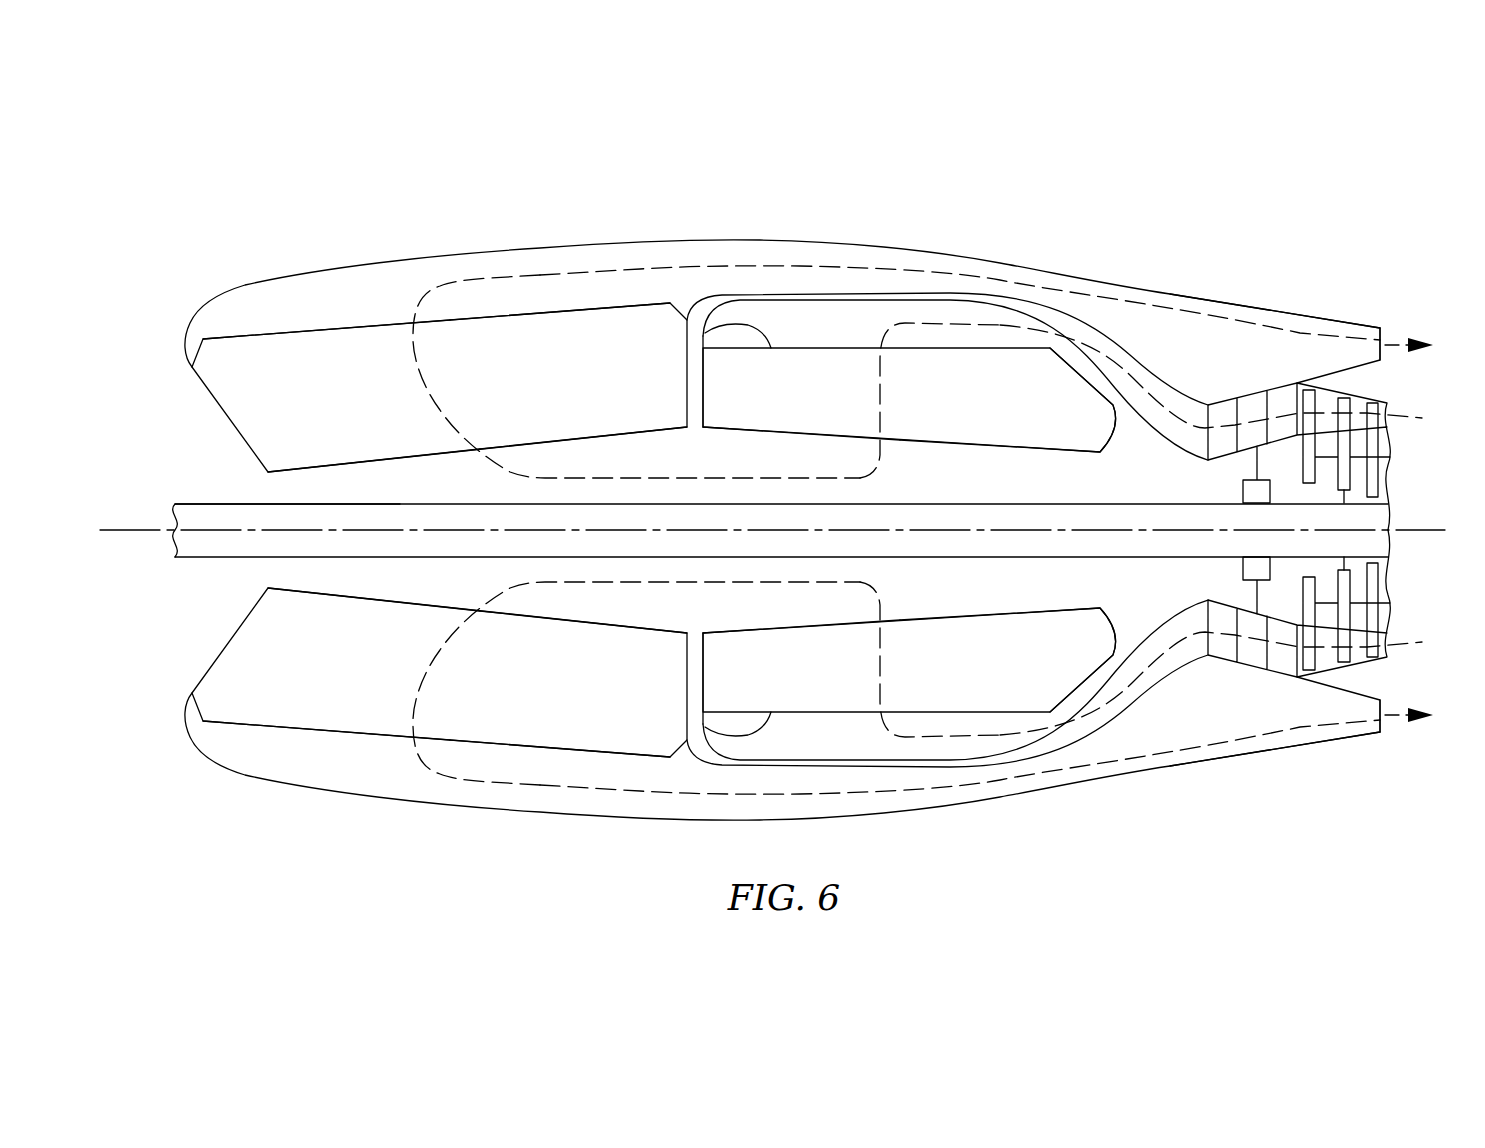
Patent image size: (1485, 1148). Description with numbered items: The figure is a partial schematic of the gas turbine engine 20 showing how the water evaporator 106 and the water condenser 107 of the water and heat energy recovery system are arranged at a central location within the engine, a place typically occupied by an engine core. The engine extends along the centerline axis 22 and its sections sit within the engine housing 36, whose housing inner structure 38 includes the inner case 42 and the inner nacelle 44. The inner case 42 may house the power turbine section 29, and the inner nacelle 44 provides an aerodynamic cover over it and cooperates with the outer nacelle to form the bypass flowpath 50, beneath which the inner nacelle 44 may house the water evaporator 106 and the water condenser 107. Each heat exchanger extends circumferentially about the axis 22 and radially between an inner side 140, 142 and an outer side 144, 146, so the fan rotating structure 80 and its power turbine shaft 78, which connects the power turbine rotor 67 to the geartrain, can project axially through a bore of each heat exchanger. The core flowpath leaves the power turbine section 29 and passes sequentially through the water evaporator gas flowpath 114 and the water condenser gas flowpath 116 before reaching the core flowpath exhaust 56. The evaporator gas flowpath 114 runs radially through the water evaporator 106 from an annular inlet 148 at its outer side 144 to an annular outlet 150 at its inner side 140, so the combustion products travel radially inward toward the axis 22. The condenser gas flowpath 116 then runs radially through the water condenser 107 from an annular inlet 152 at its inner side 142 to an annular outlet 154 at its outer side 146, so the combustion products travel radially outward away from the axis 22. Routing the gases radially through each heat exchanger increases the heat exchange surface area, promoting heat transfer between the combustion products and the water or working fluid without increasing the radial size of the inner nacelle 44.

The gas turbine engine 20 is at (226, 158).
The centerline axis 22 is at (105, 535).
The power turbine section 29 is at (800, 339).
The engine housing 36 is at (1222, 222).
The housing inner structure 38 is at (1254, 288).
The inner case 42 is at (1320, 383).
The inner nacelle 44 is at (1170, 294).
The bypass flowpath 50 is at (681, 196).
The core flowpath exhaust 56 is at (1381, 331).
The power turbine rotor 67 is at (1376, 457).
The power turbine shaft 78 is at (1050, 503).
The fan rotating structure 80 is at (197, 488).
The water evaporator 106 is at (745, 406).
The water condenser 107 is at (300, 417).
The water evaporator gas flowpath 114 is at (871, 390).
The water condenser gas flowpath 116 is at (428, 394).
The inner side of water evaporator 140 is at (928, 455).
The inner side of water condenser 142 is at (368, 462).
The outer side of water evaporator 144 is at (688, 338).
The outer side of water condenser 146 is at (348, 326).
The water evaporator gas flowpath inlet 148 is at (854, 336).
The water evaporator gas flowpath outlet 150 is at (838, 446).
The water condenser gas flowpath inlet 152 is at (591, 444).
The water condenser gas flowpath outlet 154 is at (587, 296).